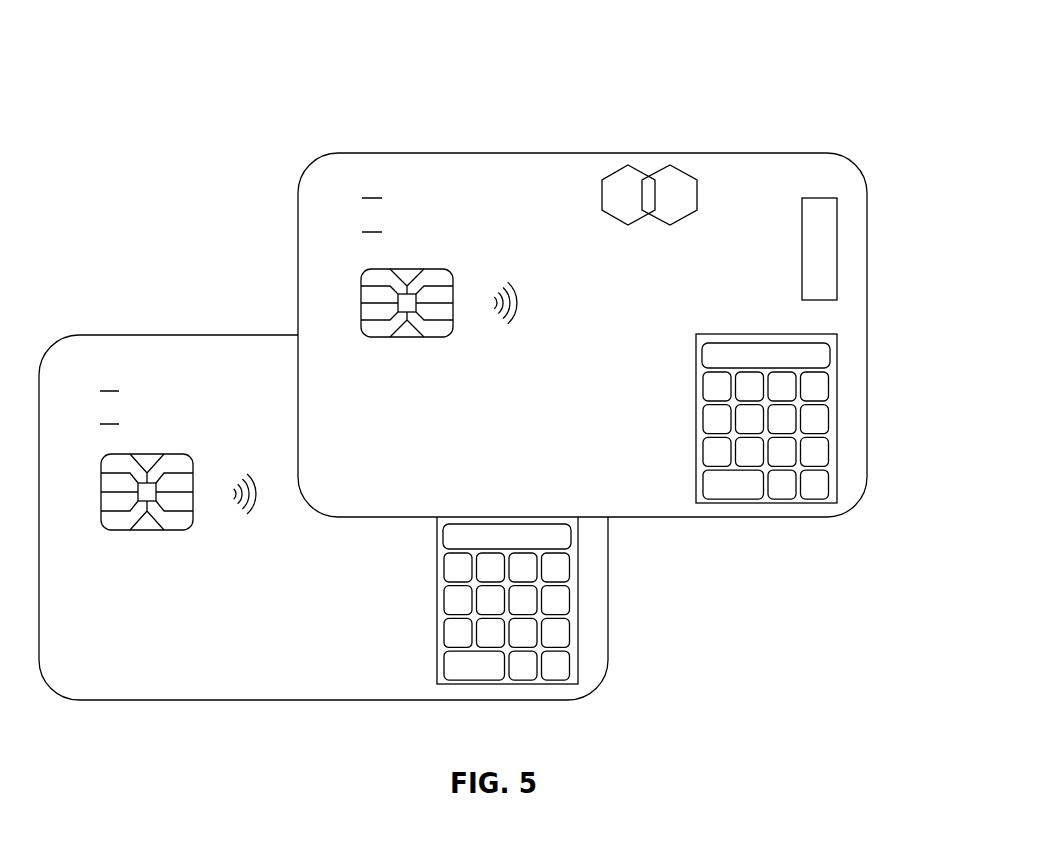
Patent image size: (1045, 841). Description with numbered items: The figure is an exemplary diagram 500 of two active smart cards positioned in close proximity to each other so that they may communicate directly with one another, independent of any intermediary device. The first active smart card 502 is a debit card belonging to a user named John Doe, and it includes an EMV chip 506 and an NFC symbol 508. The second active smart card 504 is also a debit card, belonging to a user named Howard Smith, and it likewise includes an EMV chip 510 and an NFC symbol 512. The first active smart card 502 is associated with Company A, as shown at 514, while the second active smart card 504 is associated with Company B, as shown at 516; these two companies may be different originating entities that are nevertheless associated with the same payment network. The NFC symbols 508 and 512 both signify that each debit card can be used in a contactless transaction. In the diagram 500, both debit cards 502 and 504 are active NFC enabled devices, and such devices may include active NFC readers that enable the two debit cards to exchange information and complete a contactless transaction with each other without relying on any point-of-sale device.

The exemplary diagram 500 is at (128, 51).
The first active smart card 502 is at (371, 153).
The second active smart card 504 is at (112, 335).
The EMV chip 506 is at (453, 283).
The NFC symbol 508 is at (521, 303).
The EMV chip 510 is at (168, 454).
The NFC symbol 512 is at (254, 512).
The Company A association 514 is at (858, 431).
The Company B association 516 is at (600, 648).